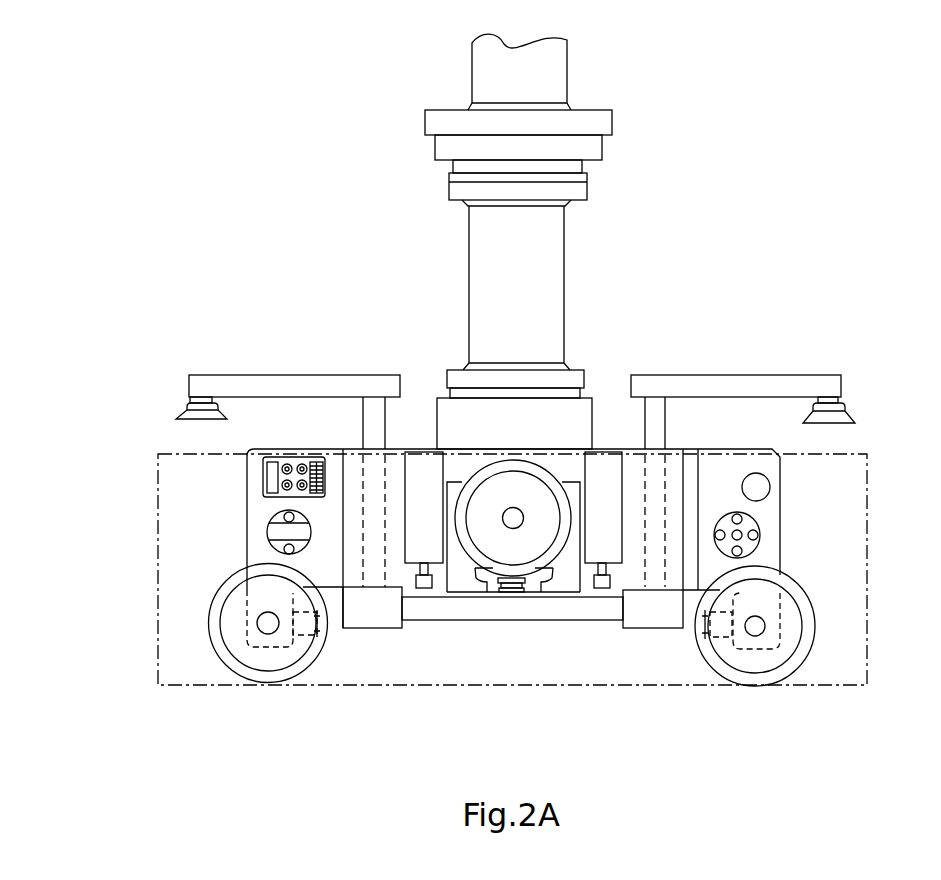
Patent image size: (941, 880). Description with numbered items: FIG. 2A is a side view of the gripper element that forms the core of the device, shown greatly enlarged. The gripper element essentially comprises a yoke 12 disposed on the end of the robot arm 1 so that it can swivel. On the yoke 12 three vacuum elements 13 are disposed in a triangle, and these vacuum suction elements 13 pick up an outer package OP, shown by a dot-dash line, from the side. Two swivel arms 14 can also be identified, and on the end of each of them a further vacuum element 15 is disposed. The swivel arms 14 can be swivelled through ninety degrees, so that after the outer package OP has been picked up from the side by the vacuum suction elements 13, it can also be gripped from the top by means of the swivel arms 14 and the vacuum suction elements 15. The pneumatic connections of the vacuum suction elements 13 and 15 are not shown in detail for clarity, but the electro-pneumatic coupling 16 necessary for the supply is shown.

The robot arm 1 is at (545, 252).
The yoke 12 is at (430, 610).
The vacuum elements 13 is at (242, 668).
The swivel arms 14 is at (280, 383).
The vacuum element 15 is at (183, 413).
The electro-pneumatic coupling 16 is at (272, 484).
The outer package OP is at (845, 645).